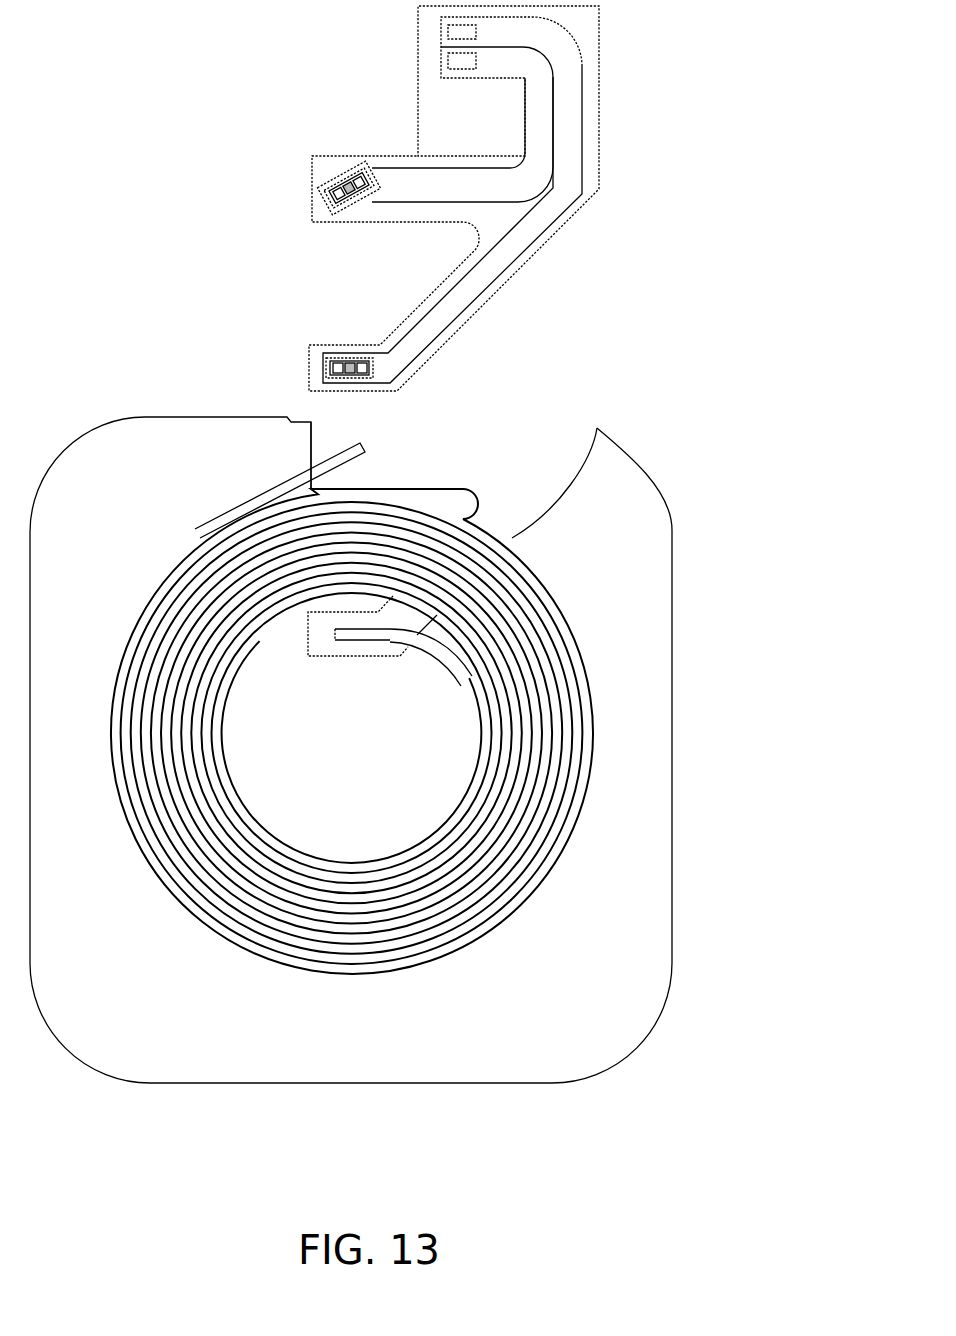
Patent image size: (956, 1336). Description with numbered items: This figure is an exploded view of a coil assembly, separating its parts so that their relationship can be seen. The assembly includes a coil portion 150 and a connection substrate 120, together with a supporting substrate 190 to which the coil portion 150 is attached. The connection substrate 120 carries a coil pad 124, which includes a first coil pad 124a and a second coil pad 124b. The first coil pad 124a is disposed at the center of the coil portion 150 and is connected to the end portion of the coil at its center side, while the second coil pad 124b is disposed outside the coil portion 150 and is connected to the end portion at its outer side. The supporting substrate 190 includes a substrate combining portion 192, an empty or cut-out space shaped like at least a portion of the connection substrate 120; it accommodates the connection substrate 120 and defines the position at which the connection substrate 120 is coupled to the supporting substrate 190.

The connection substrate 120 is at (603, 117).
The coil pad 124 is at (178, 182).
The first coil pad 124a is at (347, 360).
The second coil pad 124b is at (335, 178).
The coil portion 150 is at (271, 965).
The supporting substrate 190 is at (460, 1090).
The substrate combining portion 192 is at (470, 459).